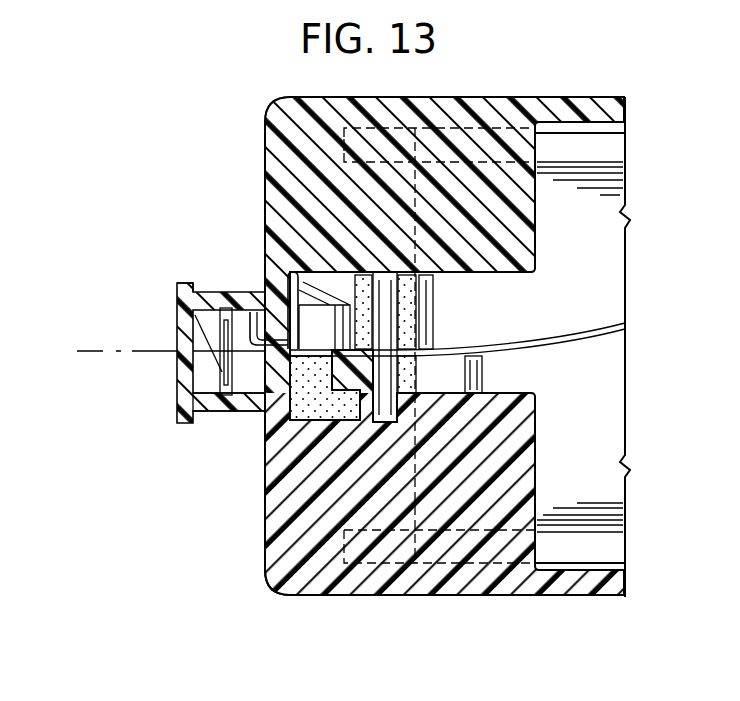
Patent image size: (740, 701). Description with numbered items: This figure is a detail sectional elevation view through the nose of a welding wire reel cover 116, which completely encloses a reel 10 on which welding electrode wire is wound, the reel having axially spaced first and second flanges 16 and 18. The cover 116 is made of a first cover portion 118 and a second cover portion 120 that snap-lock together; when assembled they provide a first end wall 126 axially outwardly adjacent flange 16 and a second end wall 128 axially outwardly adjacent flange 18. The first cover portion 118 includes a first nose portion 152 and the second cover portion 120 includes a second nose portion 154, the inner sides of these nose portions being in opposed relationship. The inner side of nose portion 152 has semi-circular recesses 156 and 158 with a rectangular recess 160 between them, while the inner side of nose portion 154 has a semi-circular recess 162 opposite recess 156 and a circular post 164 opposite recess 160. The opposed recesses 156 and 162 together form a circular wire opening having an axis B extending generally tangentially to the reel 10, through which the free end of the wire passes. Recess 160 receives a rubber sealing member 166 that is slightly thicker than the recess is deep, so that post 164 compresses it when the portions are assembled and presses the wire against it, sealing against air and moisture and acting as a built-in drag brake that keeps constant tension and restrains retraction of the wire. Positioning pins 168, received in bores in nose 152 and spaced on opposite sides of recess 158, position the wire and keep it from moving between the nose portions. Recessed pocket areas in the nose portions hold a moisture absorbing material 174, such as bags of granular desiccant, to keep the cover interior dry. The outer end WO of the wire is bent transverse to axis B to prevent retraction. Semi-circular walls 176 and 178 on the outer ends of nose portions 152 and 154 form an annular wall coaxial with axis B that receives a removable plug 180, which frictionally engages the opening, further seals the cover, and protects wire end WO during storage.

The cover 116 is at (205, 103).
The second nose portion 154 is at (250, 193).
The first nose portion 152 is at (262, 505).
The semi-circular wall 178 is at (192, 285).
The circular post 164 is at (300, 300).
The semi-circular recess 162 is at (254, 312).
The outer end of the wire WO is at (250, 330).
The axis B is at (97, 351).
The semi-circular recess 156 is at (265, 371).
The removable plug 180 is at (185, 397).
The semi-circular wall 176 is at (227, 403).
The rectangular recess 160 is at (265, 443).
The sealing member 166 is at (338, 420).
The positioning pins 168 is at (385, 395).
The semi-circular recess 158 is at (428, 315).
The moisture absorbing material 174 is at (432, 333).
The first flange 16 is at (548, 118).
The second cover portion 120 is at (560, 95).
The second end wall 128 is at (602, 107).
The reel 10 is at (617, 147).
The second flange 18 is at (572, 558).
The first cover portion 118 is at (585, 600).
The first end wall 126 is at (610, 596).